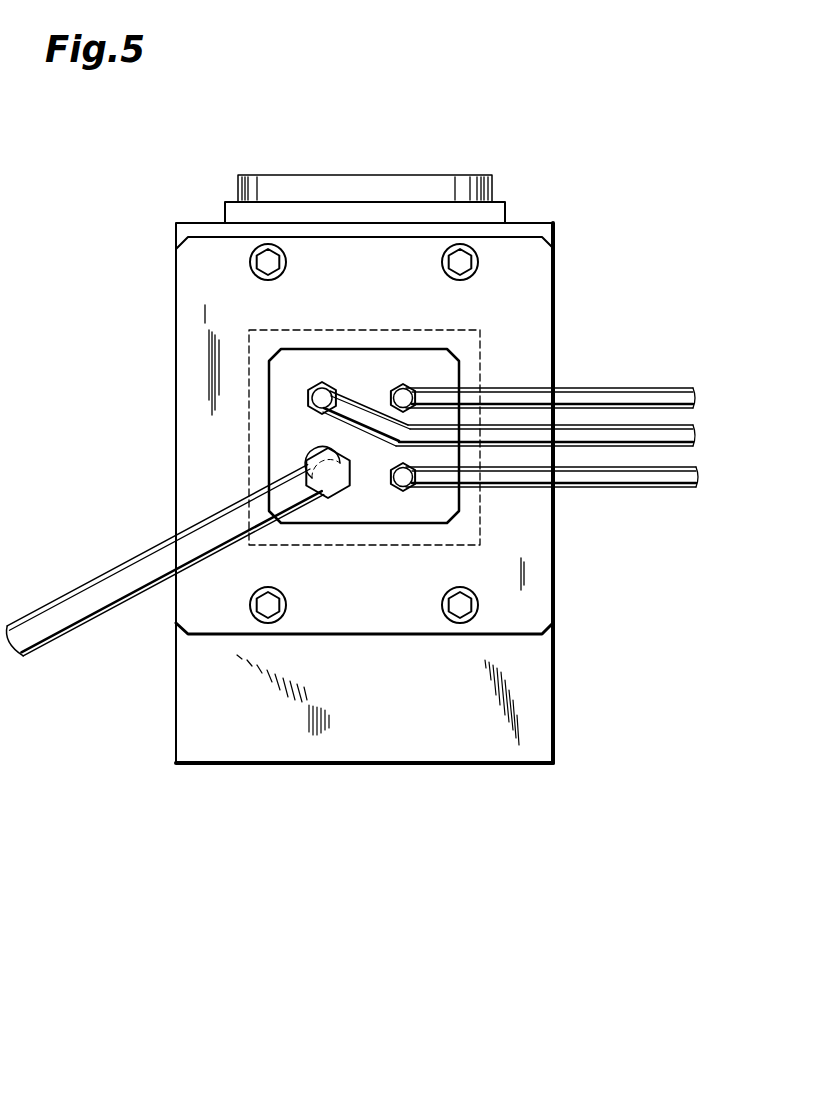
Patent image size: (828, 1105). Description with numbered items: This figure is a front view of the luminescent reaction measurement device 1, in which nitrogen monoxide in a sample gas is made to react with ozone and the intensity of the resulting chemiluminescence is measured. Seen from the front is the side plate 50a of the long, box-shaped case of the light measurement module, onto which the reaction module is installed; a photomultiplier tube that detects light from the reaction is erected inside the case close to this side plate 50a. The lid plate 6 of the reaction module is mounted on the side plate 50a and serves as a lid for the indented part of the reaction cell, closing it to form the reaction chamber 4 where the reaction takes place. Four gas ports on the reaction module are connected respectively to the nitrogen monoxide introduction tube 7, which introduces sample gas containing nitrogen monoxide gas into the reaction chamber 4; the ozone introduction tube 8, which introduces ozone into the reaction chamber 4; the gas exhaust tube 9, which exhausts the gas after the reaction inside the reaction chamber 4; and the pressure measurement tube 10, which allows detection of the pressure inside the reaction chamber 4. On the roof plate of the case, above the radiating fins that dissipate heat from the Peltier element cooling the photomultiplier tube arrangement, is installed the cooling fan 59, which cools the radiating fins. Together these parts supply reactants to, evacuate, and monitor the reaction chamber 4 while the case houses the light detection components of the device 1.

The luminescent reaction measurement device 1 is at (561, 838).
The reaction chamber 4 is at (375, 393).
The lid plate 6 is at (532, 282).
The nitrogen monoxide introduction tube 7 is at (677, 433).
The ozone introduction tube 8 is at (640, 395).
The gas exhaust tube 9 is at (110, 587).
The pressure measurement tube 10 is at (642, 475).
The side plate 50a is at (527, 707).
The cooling fan 59 is at (480, 187).